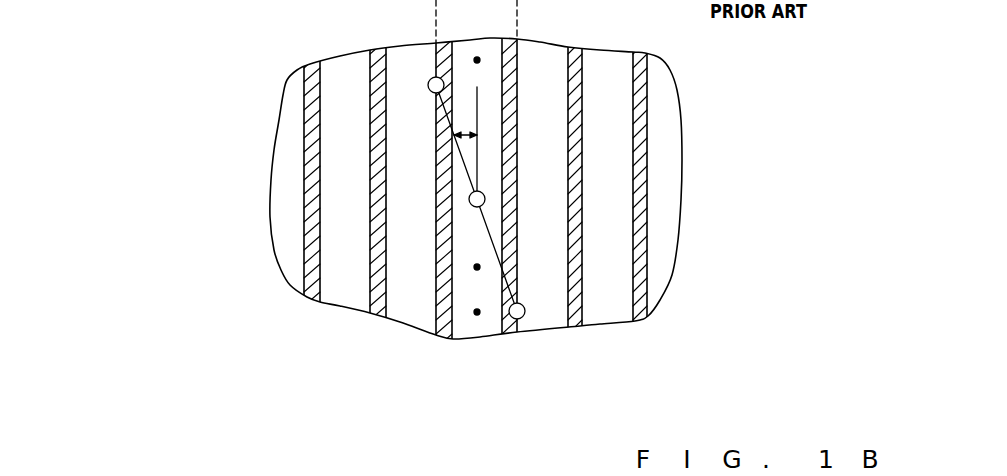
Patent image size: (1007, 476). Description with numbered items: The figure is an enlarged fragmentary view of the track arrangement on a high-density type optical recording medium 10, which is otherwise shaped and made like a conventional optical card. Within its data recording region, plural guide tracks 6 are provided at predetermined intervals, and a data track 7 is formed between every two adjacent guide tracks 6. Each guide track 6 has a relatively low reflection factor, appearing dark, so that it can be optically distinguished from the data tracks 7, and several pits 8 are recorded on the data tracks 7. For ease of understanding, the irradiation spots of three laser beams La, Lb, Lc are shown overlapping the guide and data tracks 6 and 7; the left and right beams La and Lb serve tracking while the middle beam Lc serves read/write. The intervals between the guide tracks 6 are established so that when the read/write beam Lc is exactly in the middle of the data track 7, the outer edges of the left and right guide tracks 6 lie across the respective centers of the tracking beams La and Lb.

The optical recording medium 10 is at (285, 92).
The guide tracks 6 is at (377, 320).
The data track 7 is at (415, 320).
The pits 8 is at (477, 56).
The tracking laser beam La is at (430, 82).
The tracking laser beam Lb is at (523, 305).
The read/write laser beam Lc is at (485, 196).